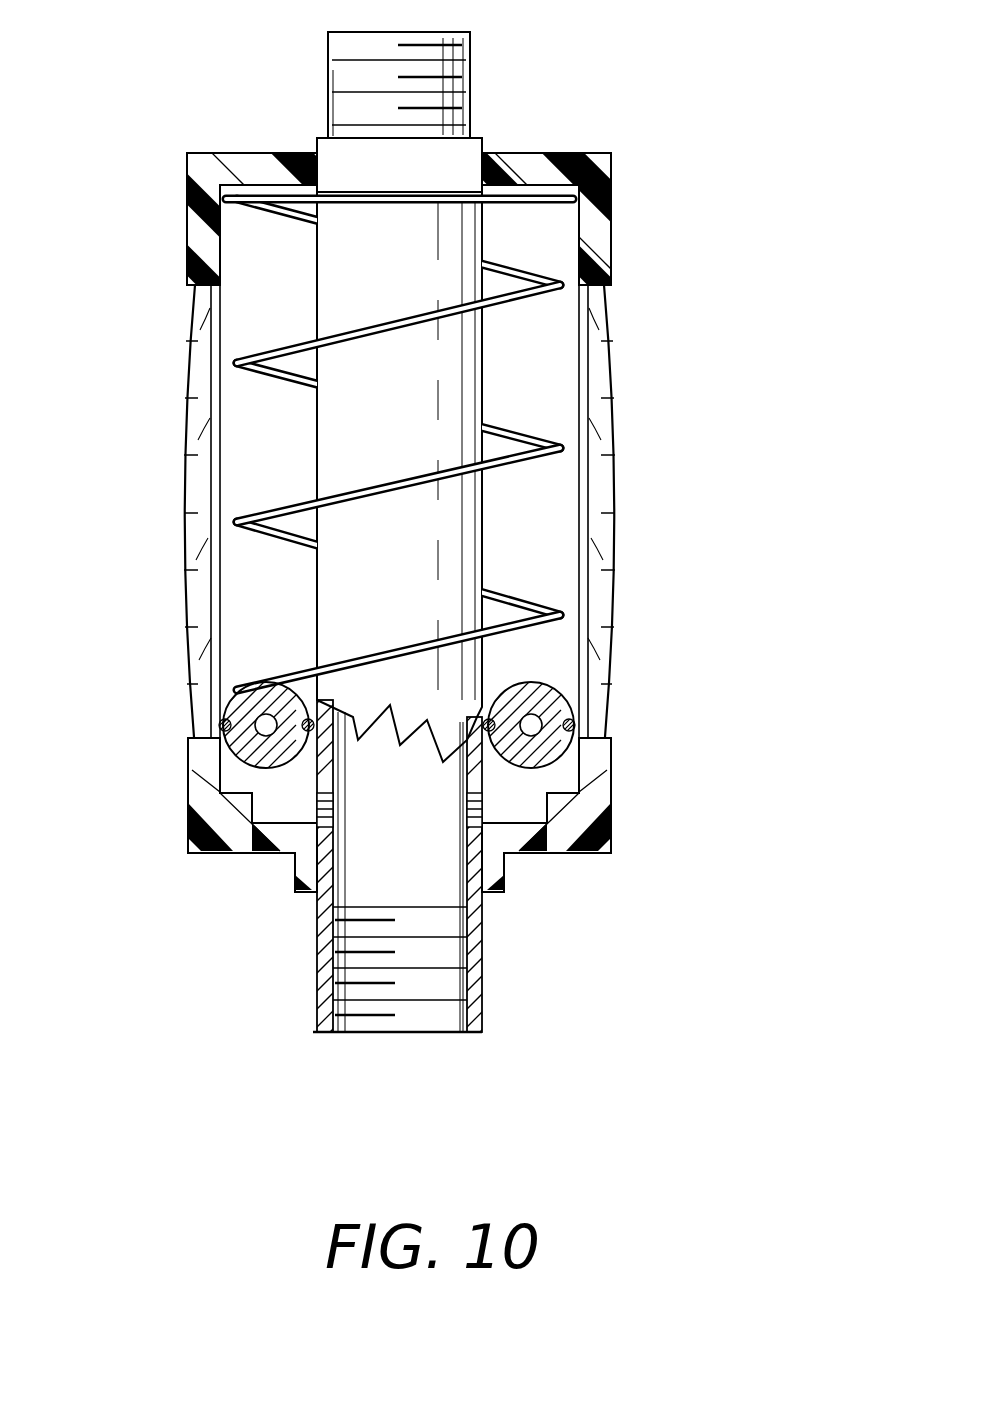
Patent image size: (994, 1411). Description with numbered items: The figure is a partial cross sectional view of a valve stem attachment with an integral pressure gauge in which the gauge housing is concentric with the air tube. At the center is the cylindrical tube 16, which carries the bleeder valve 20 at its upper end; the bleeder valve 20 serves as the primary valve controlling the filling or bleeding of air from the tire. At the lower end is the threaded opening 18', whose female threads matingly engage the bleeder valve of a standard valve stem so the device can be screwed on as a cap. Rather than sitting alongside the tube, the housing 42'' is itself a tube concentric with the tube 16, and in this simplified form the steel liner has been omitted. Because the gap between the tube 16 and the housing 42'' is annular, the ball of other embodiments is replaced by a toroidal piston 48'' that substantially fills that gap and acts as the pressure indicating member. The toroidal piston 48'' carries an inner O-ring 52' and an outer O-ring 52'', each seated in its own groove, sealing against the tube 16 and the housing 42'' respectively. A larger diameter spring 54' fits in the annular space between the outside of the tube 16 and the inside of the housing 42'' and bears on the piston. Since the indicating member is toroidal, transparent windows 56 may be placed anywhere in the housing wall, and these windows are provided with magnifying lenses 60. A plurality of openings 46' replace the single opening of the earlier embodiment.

The bleeder valve 20 is at (473, 72).
The housing 42'' is at (404, 175).
The transparent window 56 is at (608, 318).
The magnifying lens 60 is at (617, 440).
The cylindrical tube 16 is at (483, 545).
The spring 54' is at (518, 444).
The outer O-ring 52'' is at (515, 720).
The toroidal piston 48'' is at (498, 814).
The inner O-ring 52' is at (400, 866).
The openings 46' is at (409, 867).
The threaded opening 18' is at (462, 891).